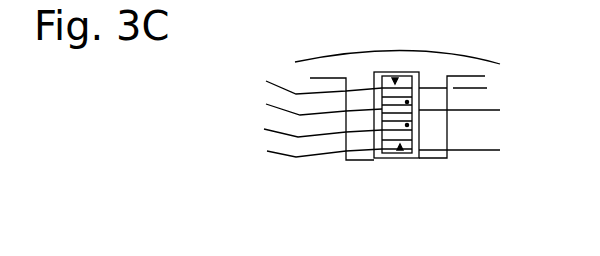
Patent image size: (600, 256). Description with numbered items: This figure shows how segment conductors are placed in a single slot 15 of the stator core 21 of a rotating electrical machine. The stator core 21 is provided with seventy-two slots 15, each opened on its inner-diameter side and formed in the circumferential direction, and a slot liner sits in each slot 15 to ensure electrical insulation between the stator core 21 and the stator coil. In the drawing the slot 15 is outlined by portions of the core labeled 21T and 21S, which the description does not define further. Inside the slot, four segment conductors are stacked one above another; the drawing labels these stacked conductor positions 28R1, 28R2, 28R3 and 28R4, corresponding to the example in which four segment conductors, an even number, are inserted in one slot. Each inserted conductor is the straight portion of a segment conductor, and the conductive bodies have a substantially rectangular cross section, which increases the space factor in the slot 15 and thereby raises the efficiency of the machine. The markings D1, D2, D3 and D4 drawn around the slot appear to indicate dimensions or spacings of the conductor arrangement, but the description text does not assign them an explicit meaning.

The slot 15 is at (420, 158).
The stator core 21 is at (463, 54).
The top portion of cover 21T is at (353, 162).
The side portion of cover 21S is at (420, 159).
The first row electrode 28R1 is at (361, 81).
The second row electrode 28R2 is at (367, 106).
The third row electrode 28R3 is at (308, 130).
The fourth row electrode 28R4 is at (367, 152).
The first distance D1 is at (395, 80).
The second distance D2 is at (408, 101).
The third distance D3 is at (408, 125).
The fourth distance D4 is at (400, 149).